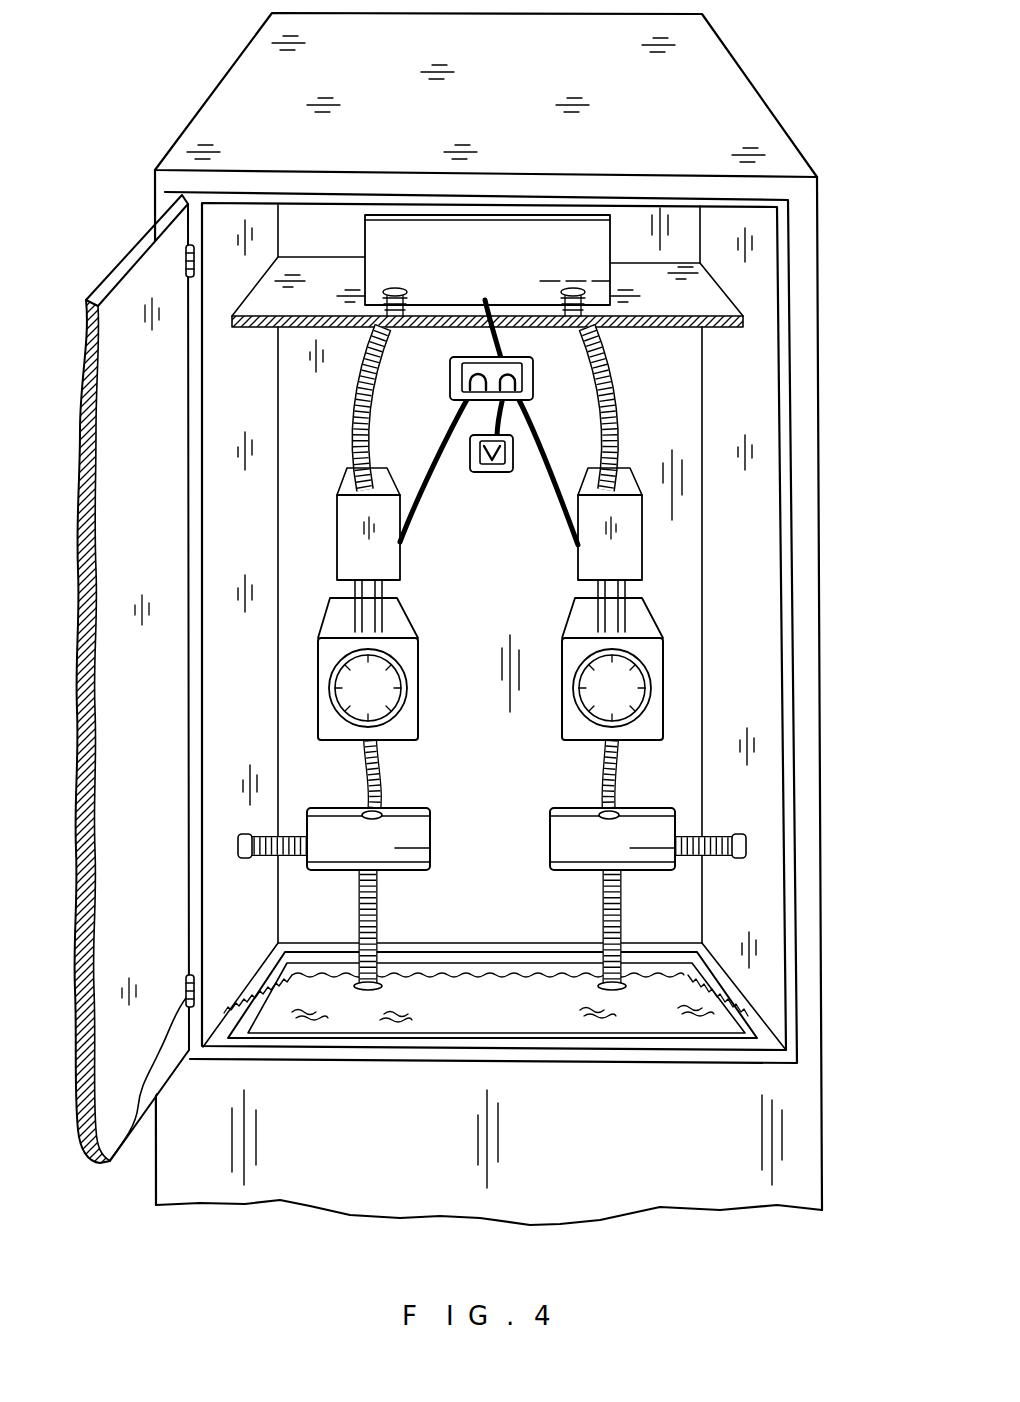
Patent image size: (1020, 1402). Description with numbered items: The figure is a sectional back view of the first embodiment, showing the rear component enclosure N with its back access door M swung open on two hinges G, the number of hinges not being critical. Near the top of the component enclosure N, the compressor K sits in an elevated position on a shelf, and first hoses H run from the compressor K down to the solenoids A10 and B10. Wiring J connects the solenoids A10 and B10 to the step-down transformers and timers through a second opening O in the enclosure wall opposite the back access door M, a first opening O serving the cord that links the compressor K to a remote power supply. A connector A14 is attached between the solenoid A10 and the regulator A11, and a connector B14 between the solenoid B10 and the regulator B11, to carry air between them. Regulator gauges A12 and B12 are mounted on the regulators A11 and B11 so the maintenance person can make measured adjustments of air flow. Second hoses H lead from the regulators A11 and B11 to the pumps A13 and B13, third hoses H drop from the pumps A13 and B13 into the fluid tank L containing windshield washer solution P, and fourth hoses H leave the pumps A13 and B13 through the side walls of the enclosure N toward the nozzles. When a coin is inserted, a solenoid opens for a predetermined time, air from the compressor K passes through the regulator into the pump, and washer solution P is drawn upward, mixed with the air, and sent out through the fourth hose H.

The rear component enclosure N is at (775, 233).
The back access door M is at (102, 360).
The hinges G is at (186, 256).
The compressor K is at (526, 235).
The fluid tank L is at (746, 1002).
The windshield washer solution P is at (656, 1027).
The hoses H is at (355, 433).
The opening O is at (532, 374).
The wiring J is at (552, 482).
The solenoid A10 is at (338, 535).
The regulator A11 is at (313, 673).
The regulator gauge A12 is at (336, 702).
The pump A13 is at (410, 868).
The connector A14 is at (358, 606).
The solenoid B10 is at (642, 540).
The regulator B11 is at (671, 669).
The regulator gauge B12 is at (642, 705).
The pump B13 is at (565, 870).
The connector B14 is at (625, 612).